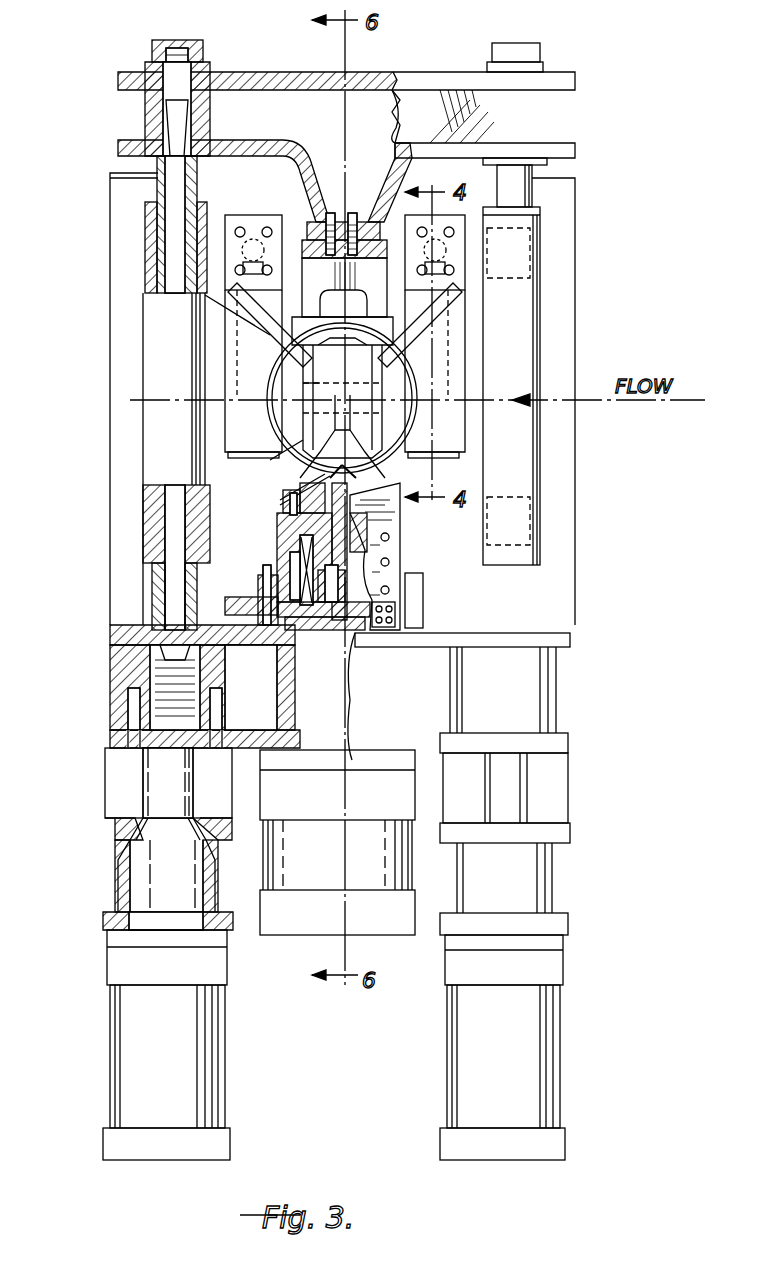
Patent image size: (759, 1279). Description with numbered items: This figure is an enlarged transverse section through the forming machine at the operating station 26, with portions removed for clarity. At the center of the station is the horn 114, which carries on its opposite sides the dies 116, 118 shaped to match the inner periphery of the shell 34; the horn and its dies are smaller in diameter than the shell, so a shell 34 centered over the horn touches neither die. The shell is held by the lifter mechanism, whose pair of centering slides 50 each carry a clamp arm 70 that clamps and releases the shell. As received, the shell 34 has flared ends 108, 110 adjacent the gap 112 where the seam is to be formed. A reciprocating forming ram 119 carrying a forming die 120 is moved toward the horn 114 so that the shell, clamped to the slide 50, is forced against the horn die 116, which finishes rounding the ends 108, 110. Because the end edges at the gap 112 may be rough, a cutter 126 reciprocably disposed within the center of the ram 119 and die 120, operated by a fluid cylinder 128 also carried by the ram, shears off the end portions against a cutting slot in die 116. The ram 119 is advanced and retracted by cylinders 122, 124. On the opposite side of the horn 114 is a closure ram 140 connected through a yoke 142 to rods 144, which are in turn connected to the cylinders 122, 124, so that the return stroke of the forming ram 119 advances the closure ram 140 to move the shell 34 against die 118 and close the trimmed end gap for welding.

The operating station 26 is at (395, 408).
The shell 34 is at (420, 438).
The centering slide 50 is at (222, 368).
The clamp arm 70 is at (235, 332).
The flared end 108 is at (345, 470).
The flared end 110 is at (385, 508).
The gap 112 is at (300, 530).
The horn 114 is at (330, 415).
The horn die 116 is at (300, 440).
The horn die 118 is at (320, 395).
The forming ram 119 is at (265, 605).
The forming die 120 is at (295, 517).
The cylinder 122 is at (118, 1036).
The cylinder 124 is at (560, 1035).
The cutter 126 is at (365, 535).
The fluid cylinder 128 is at (417, 856).
The closure ram 140 is at (305, 225).
The yoke 142 is at (266, 72).
The rod 144 is at (160, 230).